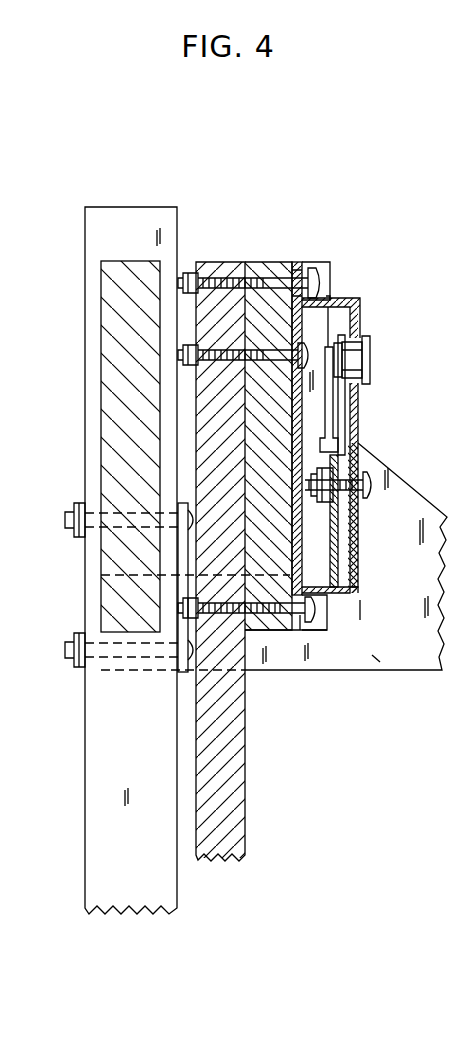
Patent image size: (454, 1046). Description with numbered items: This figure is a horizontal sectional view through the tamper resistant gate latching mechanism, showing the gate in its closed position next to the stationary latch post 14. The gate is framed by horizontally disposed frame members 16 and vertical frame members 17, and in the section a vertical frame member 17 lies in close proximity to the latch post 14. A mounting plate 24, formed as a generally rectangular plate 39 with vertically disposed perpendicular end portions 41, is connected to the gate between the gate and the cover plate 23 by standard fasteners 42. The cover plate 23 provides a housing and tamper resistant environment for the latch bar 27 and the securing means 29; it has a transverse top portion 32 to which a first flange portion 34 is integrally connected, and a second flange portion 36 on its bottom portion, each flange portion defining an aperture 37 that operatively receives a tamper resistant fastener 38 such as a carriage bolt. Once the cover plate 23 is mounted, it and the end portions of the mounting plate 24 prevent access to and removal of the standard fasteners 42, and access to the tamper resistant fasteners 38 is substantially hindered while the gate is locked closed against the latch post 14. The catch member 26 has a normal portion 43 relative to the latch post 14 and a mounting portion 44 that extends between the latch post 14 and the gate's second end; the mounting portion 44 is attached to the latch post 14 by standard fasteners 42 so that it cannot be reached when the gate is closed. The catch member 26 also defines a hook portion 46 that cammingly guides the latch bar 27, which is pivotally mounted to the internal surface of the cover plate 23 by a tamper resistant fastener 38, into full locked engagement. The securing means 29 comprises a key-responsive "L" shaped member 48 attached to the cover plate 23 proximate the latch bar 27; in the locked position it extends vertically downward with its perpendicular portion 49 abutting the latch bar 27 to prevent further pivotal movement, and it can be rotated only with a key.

The stationary latch post 14 is at (122, 215).
The horizontally disposed frame members 16 is at (266, 268).
The vertical frame members 17 is at (204, 268).
The cover plate 23 is at (357, 590).
The mounting plate 24 is at (312, 322).
The catch member 26 is at (376, 656).
The latch bar 27 is at (336, 557).
The securing means 29 is at (371, 360).
The top portion 32 is at (325, 273).
The first flange portion 34 is at (315, 275).
The second flange portion 36 is at (300, 628).
The aperture 37 is at (285, 616).
The tamper resistant fastener 38 is at (233, 278).
The generally rectangular plate 39 is at (297, 270).
The perpendicular end portions 41 is at (332, 297).
The standard fasteners 42 is at (223, 357).
The normal portion 43 is at (297, 657).
The mounting portion 44 is at (182, 673).
The hook portion 46 is at (363, 458).
The "L" shaped member 48 is at (340, 404).
The perpendicular portion 49 is at (331, 430).